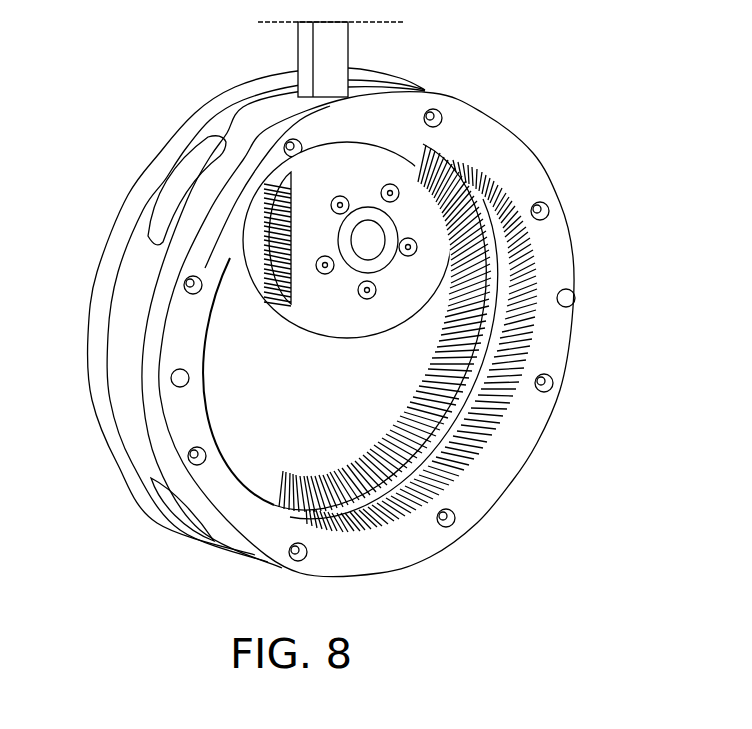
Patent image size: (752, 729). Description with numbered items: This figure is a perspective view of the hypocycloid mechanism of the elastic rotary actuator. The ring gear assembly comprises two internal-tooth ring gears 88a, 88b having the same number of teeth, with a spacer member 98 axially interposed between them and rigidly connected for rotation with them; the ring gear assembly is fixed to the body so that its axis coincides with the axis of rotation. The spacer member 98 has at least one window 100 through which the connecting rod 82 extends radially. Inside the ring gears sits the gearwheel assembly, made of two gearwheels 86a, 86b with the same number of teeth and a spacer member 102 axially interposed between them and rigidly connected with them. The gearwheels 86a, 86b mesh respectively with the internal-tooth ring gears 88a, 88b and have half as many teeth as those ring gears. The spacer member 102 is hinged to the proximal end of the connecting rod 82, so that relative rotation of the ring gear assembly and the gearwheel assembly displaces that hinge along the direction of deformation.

The connecting rod 82 is at (346, 44).
The gearwheel 86a is at (257, 312).
The gearwheel 86b is at (403, 293).
The internal-tooth ring gear 88a is at (443, 437).
The internal-tooth ring gear 88b is at (390, 543).
The spacer member 98 is at (125, 348).
The window 100 is at (207, 155).
The spacer member 102 is at (250, 233).